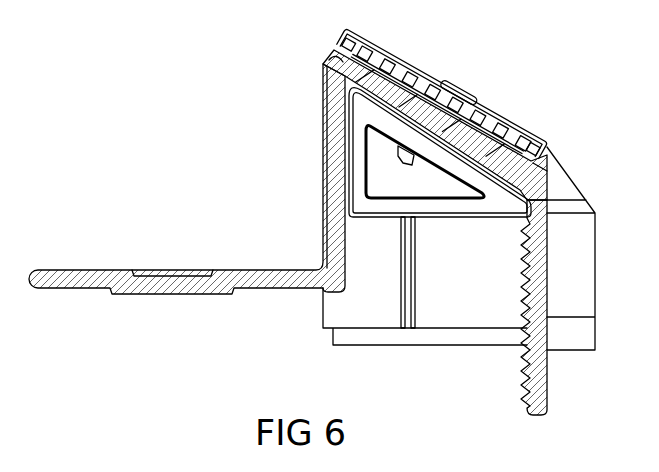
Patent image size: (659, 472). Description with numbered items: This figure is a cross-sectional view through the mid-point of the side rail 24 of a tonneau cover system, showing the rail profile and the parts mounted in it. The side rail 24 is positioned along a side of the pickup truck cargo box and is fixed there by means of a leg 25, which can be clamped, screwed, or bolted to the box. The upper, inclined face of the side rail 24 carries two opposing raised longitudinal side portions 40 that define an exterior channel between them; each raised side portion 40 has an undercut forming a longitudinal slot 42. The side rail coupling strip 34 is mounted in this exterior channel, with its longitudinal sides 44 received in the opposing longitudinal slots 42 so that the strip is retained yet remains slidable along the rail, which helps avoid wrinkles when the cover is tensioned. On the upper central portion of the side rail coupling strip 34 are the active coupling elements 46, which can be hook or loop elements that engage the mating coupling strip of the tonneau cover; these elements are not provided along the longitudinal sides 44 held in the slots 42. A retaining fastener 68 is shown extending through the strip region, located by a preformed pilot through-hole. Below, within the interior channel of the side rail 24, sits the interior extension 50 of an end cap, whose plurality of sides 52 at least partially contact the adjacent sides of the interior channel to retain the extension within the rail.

The side rail 24 is at (278, 233).
The leg 25 is at (531, 366).
The side rail coupling strip 34 is at (512, 92).
The raised longitudinal side portion 40 is at (354, 36).
The longitudinal slot 42 is at (331, 56).
The longitudinal side 44 is at (345, 41).
The active coupling element 46 is at (424, 65).
The interior extension 50 is at (387, 207).
The side 52 is at (348, 128).
The retaining fastener 68 is at (462, 82).